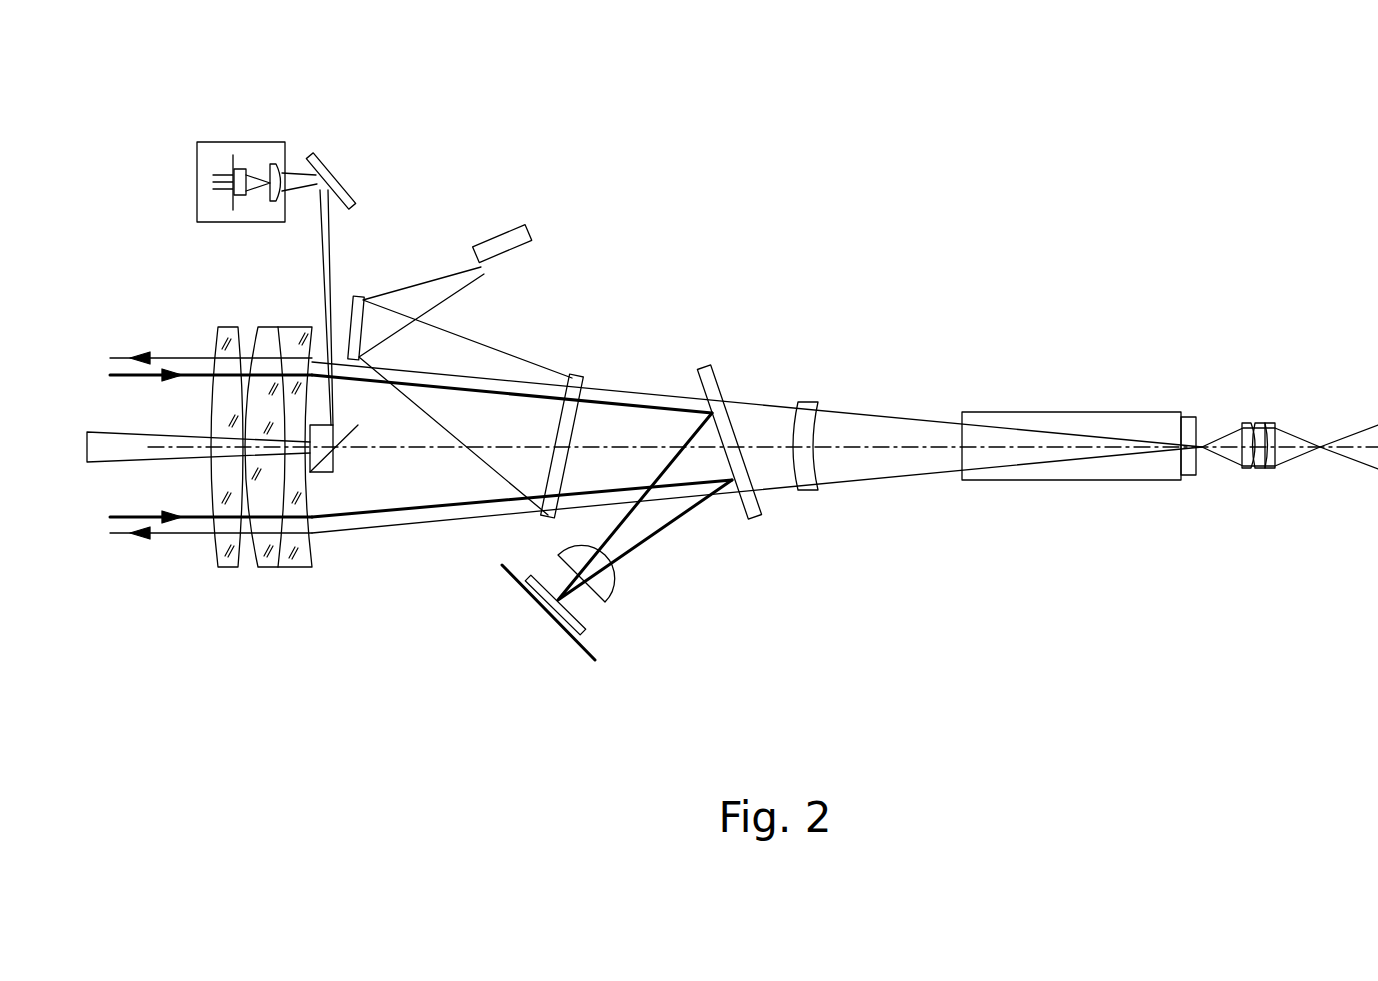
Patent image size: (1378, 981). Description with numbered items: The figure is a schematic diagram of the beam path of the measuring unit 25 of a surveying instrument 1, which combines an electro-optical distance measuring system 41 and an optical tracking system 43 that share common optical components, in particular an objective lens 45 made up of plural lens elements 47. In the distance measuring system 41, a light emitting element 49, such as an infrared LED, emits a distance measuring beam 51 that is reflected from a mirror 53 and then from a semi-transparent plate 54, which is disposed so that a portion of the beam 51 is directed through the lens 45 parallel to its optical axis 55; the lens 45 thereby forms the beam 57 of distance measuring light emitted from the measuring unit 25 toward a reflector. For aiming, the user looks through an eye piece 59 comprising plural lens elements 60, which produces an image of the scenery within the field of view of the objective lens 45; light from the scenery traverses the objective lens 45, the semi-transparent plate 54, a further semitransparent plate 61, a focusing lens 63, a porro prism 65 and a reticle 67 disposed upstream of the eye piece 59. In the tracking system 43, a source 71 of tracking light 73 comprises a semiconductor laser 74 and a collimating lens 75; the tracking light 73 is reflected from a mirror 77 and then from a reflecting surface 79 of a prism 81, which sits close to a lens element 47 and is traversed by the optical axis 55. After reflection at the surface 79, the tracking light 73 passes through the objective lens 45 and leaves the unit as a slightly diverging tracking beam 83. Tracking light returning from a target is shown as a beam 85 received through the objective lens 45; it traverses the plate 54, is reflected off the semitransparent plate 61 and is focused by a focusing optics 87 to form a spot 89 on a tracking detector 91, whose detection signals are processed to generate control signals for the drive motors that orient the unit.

The optical measuring device 1 is at (665, 140).
The measuring unit 25 is at (764, 256).
The electro-optical distance measuring system 41 is at (466, 202).
The optical tracking system 43 is at (256, 98).
The objective lens 45 is at (259, 443).
The lens elements 47 is at (290, 327).
The light emitting element 49 is at (513, 245).
The distance measuring beam 51 is at (421, 283).
The mirror 53 is at (356, 297).
The semi-transparent plate 54 is at (577, 376).
The optical axis 55 is at (864, 450).
The beam of distance measuring light 57 is at (127, 537).
The eye piece 59 is at (1262, 441).
The lens elements 60 is at (1268, 423).
The semitransparent plate 61 is at (757, 520).
The focusing lens 63 is at (808, 402).
The porro prism 65 is at (1090, 480).
The reticle 67 is at (1190, 478).
The source of tracking light 71 is at (214, 168).
The tracking light 73 is at (298, 168).
The semiconductor laser 74 is at (197, 200).
The collimating lens 75 is at (276, 200).
The mirror 77 is at (331, 163).
The reflecting surface 79 is at (330, 531).
The prism 81 is at (357, 424).
The tracking beam 83 is at (97, 464).
The beam 85 is at (213, 532).
The focusing optics 87 is at (615, 592).
The spot 89 is at (568, 610).
The tracking detector 91 is at (537, 608).